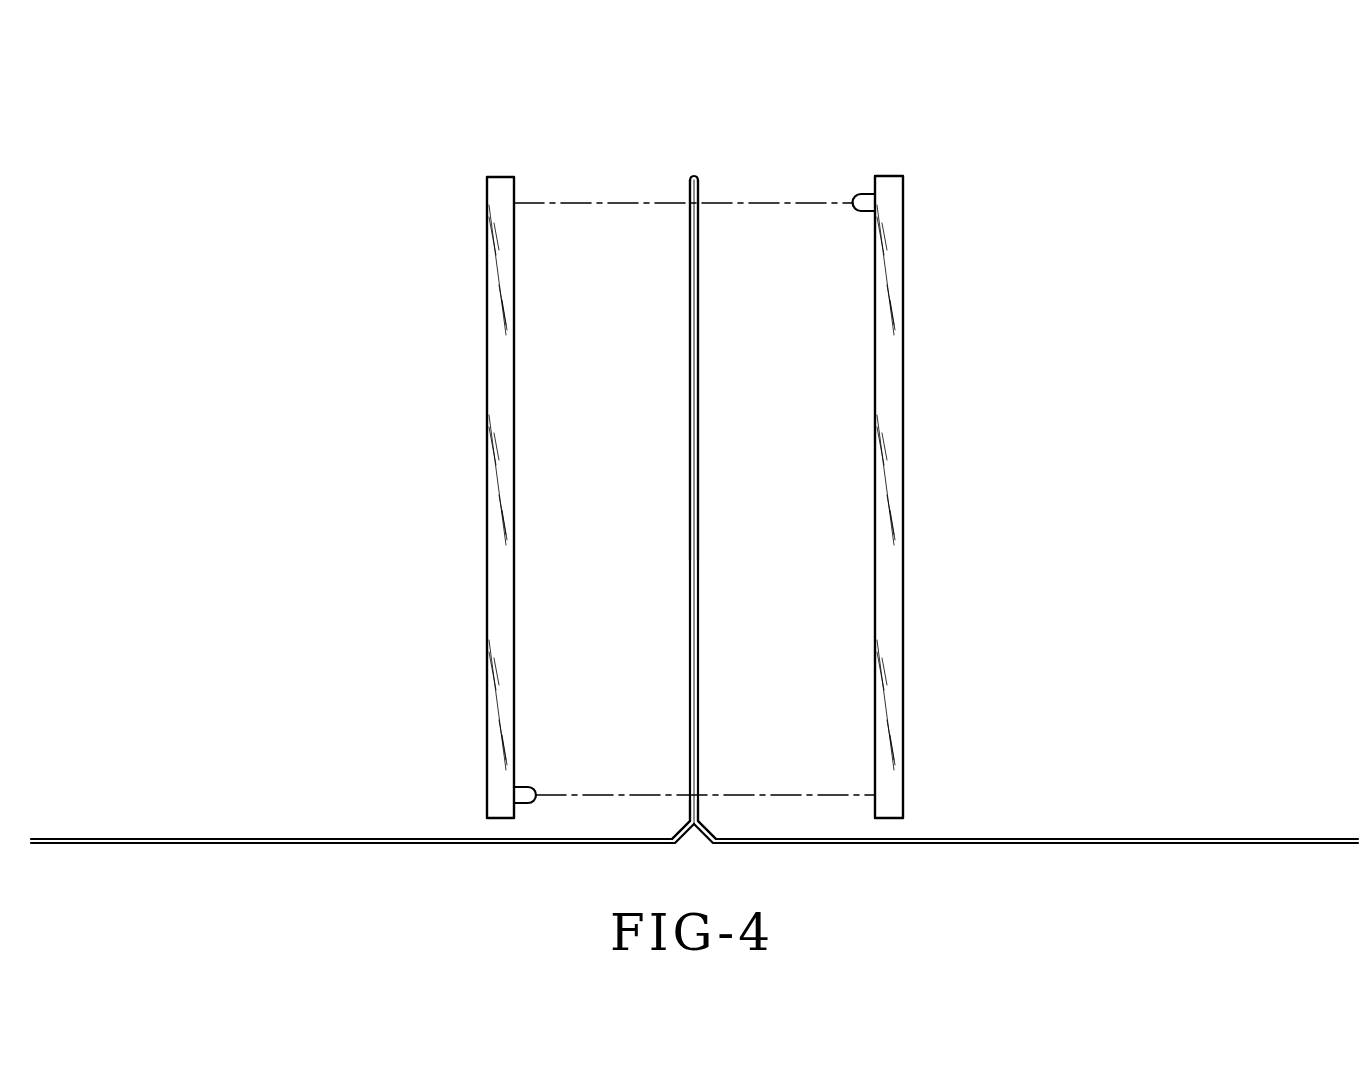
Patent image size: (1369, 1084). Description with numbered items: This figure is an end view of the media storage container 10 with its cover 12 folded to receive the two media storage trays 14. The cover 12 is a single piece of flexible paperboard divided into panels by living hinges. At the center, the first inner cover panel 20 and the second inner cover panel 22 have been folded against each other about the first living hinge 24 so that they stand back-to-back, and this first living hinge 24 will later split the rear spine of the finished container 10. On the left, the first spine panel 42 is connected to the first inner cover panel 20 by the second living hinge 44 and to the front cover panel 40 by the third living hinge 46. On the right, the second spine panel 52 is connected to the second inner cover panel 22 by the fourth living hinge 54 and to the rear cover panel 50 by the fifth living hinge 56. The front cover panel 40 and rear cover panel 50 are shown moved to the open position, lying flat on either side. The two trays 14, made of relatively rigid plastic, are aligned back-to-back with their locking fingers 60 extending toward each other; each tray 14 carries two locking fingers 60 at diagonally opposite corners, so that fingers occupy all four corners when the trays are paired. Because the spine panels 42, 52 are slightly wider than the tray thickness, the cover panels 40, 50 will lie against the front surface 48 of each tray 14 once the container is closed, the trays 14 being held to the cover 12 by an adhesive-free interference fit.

The media storage container 10 is at (1102, 281).
The cover 12 is at (694, 535).
The media storage tray 14 is at (478, 379).
The first inner cover panel 20 is at (695, 459).
The second inner cover panel 22 is at (698, 467).
The first living hinge 24 is at (694, 175).
The front cover panel 40 is at (204, 838).
The first spine panel 42 is at (682, 827).
The second living hinge 44 is at (688, 822).
The third living hinge 46 is at (671, 845).
The front surface 48 is at (487, 561).
The rear cover panel 50 is at (1137, 838).
The second spine panel 52 is at (706, 827).
The fourth living hinge 54 is at (700, 822).
The fifth living hinge 56 is at (714, 845).
The locking finger 60 is at (858, 196).